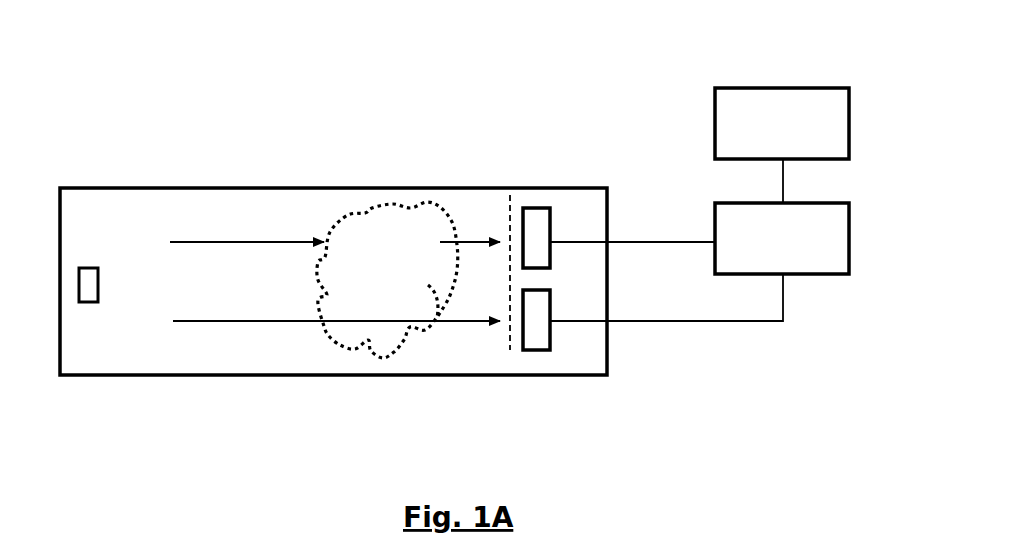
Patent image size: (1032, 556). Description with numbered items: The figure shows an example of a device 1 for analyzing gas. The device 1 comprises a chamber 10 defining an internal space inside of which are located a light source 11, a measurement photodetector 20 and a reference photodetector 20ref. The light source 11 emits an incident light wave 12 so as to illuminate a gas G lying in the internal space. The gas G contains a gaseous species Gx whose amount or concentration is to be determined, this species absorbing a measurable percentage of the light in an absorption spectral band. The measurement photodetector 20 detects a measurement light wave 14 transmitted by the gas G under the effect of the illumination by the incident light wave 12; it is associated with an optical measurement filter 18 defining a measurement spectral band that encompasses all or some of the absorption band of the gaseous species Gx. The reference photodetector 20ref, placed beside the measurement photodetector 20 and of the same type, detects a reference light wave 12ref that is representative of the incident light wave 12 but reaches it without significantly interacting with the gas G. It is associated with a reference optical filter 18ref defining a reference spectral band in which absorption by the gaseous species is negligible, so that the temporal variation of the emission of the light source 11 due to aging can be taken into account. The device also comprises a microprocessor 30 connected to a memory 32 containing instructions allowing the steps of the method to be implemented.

The device for analyzing gas 1 is at (110, 158).
The chamber 10 is at (323, 388).
The light source 11 is at (89, 318).
The incident light wave 12 is at (301, 233).
The reference light wave 12ref is at (198, 333).
The measurement light wave 14 is at (460, 232).
The gas G is at (371, 230).
The gaseous species Gx is at (403, 227).
The optical measurement filter 18 is at (500, 198).
The reference optical filter 18ref is at (514, 360).
The measurement photodetector 20 is at (539, 197).
The reference photodetector 20ref is at (550, 333).
The microprocessor 30 is at (778, 242).
The memory 32 is at (777, 113).